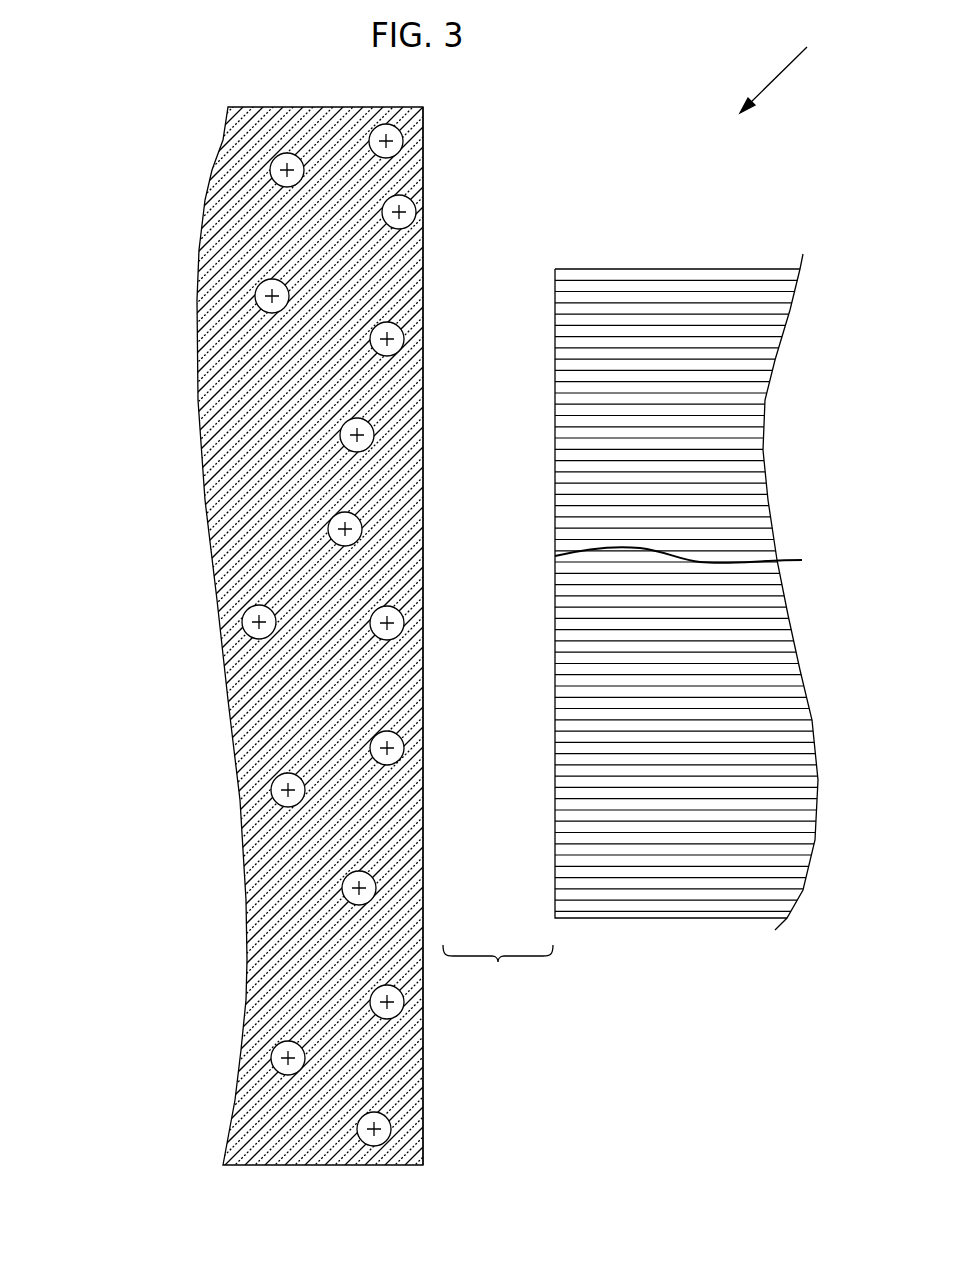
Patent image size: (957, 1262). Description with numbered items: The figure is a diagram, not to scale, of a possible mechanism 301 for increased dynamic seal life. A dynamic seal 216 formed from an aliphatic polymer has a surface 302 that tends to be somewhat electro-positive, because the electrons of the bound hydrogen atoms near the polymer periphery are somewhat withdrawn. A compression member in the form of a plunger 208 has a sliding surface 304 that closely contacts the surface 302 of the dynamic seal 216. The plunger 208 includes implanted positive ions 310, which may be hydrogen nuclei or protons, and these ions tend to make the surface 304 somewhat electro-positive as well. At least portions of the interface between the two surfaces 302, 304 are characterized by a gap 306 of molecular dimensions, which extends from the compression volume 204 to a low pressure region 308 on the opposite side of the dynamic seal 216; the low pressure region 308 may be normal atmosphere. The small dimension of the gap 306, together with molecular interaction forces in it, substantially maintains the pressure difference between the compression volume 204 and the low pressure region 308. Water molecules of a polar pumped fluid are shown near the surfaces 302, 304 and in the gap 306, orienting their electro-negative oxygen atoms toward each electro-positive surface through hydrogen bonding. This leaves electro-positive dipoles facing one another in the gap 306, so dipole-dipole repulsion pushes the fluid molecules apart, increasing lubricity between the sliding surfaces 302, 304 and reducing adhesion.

The electrode-electrolyte interface system 301 is at (784, 64).
The compression volume 204 is at (489, 480).
The dynamic seal 216 is at (652, 269).
The implanted positive ions 310 is at (271, 180).
The plunger 208 is at (212, 560).
The surface of the dynamic seal 302 is at (707, 552).
The gap 306 is at (498, 633).
The sliding surface of the plunger 304 is at (425, 1082).
The low pressure region 308 is at (690, 631).